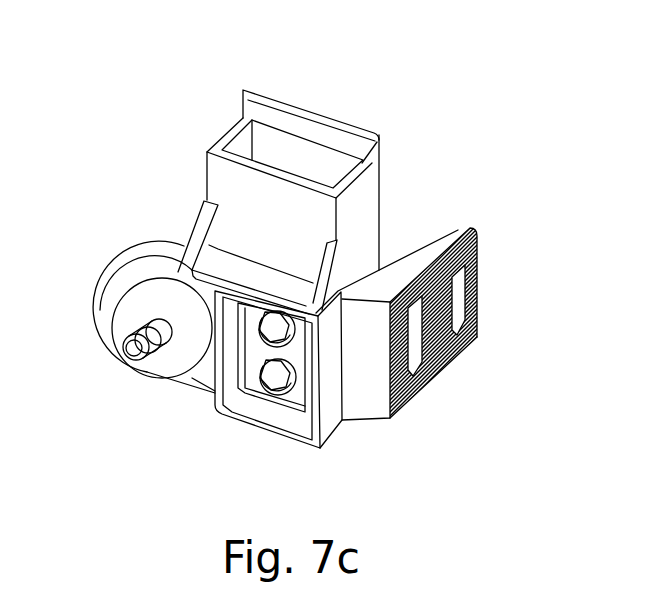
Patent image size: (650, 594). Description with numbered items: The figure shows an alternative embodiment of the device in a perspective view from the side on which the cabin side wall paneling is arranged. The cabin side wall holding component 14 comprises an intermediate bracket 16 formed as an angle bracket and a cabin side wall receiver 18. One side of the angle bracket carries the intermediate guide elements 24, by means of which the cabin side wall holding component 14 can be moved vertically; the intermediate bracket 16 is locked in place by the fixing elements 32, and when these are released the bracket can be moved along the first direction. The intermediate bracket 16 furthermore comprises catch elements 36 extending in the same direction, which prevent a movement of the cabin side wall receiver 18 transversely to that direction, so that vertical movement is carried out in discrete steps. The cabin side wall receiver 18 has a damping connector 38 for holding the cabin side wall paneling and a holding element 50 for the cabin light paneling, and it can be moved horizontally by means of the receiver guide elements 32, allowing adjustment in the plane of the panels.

The cabin side wall holding component 14 is at (512, 113).
The intermediate bracket 16 is at (420, 250).
The cabin side wall receiver 18 is at (153, 254).
The intermediate guide element 24 is at (458, 292).
The fixing elements 32 is at (277, 382).
The catch elements 36 is at (463, 350).
The damping connector 38 is at (123, 310).
The holding element 50 is at (272, 148).